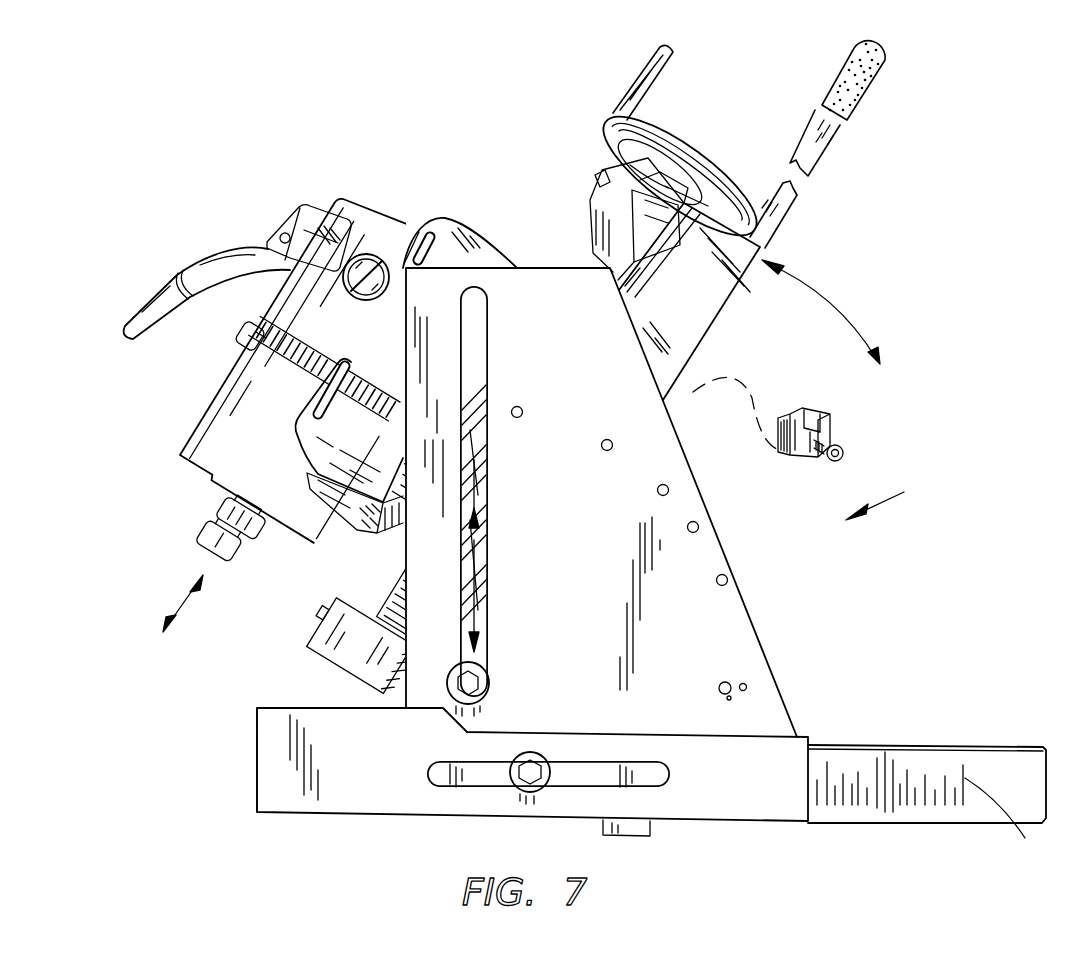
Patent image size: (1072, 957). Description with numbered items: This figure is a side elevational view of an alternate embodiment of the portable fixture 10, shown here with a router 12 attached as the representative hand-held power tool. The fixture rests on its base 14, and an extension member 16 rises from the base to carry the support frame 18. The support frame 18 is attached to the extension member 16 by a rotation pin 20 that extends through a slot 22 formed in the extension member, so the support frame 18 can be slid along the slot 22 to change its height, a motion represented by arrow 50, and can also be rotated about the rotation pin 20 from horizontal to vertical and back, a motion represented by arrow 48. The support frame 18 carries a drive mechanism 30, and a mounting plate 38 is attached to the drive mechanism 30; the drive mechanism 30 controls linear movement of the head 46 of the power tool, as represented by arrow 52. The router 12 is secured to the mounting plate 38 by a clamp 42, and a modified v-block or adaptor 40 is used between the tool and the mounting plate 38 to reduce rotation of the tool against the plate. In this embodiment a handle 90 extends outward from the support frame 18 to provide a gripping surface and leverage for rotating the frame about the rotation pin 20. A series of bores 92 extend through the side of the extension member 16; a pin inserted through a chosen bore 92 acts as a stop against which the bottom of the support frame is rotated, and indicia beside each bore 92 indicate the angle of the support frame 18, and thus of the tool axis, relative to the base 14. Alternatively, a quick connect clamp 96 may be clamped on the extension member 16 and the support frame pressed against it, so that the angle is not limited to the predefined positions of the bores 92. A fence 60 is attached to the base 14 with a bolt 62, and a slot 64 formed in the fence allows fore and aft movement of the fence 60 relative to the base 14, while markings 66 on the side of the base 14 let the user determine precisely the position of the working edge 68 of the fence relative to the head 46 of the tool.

The portable fixture 10 is at (893, 498).
The router 12 is at (207, 412).
The base 14 is at (868, 753).
The extension members 16 is at (657, 423).
The support frame 18 is at (716, 318).
The rotation pins 20 is at (490, 683).
The slots 22 is at (472, 508).
The drive mechanism 30 is at (700, 158).
The mounting plate 38 is at (460, 226).
The adaptor 40 is at (345, 532).
The clamp 42 is at (238, 331).
The head 46 is at (200, 540).
The arrow 48 is at (800, 283).
The arrow 50 is at (470, 566).
The arrow 52 is at (182, 604).
The fence 60 is at (357, 798).
The bolts 62 is at (520, 791).
The base slot 64 is at (652, 778).
The markings 66 is at (1004, 823).
The working edge 68 is at (257, 745).
The handle 90 is at (828, 150).
The bores 92 is at (698, 525).
The quick connect clamp 96 is at (826, 416).